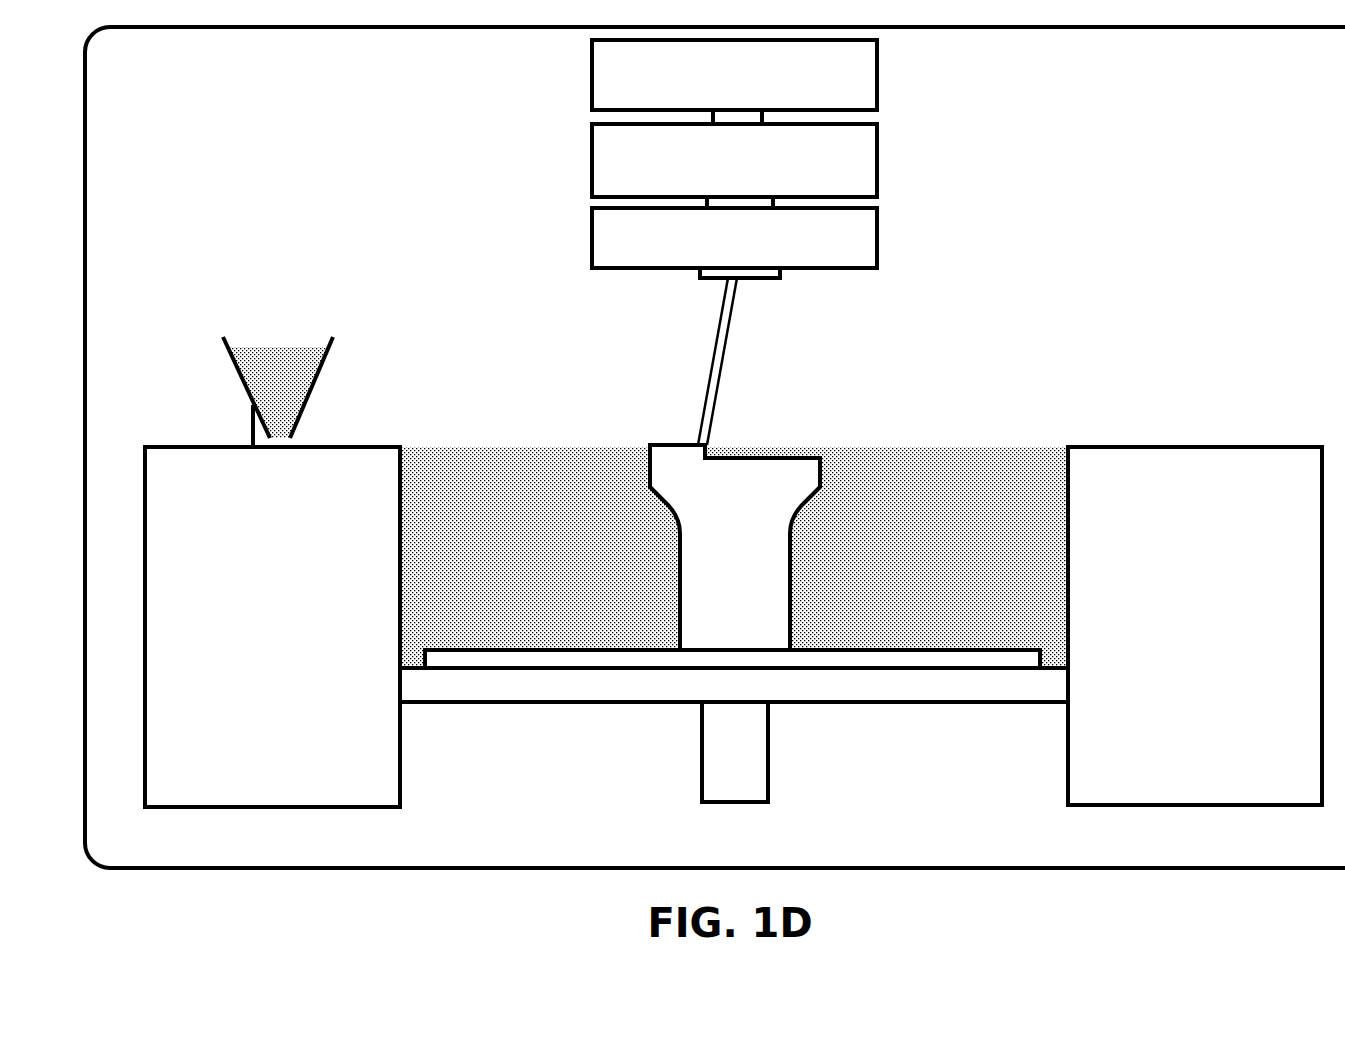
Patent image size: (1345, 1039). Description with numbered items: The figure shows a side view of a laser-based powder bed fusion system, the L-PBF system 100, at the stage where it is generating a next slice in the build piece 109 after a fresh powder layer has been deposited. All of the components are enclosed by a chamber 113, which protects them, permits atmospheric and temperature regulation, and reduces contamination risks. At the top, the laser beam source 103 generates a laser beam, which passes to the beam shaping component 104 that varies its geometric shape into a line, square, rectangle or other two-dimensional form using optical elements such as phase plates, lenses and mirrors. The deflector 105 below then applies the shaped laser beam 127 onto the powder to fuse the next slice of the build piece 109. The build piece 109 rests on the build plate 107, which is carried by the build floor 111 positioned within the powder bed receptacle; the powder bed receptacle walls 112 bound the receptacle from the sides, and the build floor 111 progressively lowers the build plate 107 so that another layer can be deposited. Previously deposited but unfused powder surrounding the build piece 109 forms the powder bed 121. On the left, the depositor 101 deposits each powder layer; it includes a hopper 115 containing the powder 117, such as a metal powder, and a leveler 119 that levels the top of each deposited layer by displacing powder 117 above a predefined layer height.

The L-PBF system 100 is at (1047, 907).
The depositor 101 is at (205, 348).
The laser beam source 103 is at (734, 75).
The beam shaping component 104 is at (734, 160).
The deflector 105 is at (734, 238).
The build plate 107 is at (1010, 648).
The build piece 109 is at (826, 457).
The build floor 111 is at (818, 702).
The powder bed receptacle wall 112 is at (733, 627).
The chamber 113 is at (715, 447).
The hopper 115 is at (313, 387).
The powder 117 is at (273, 372).
The leveler 119 is at (252, 428).
The powder bed 121 is at (1008, 475).
The laser beam 127 is at (707, 387).